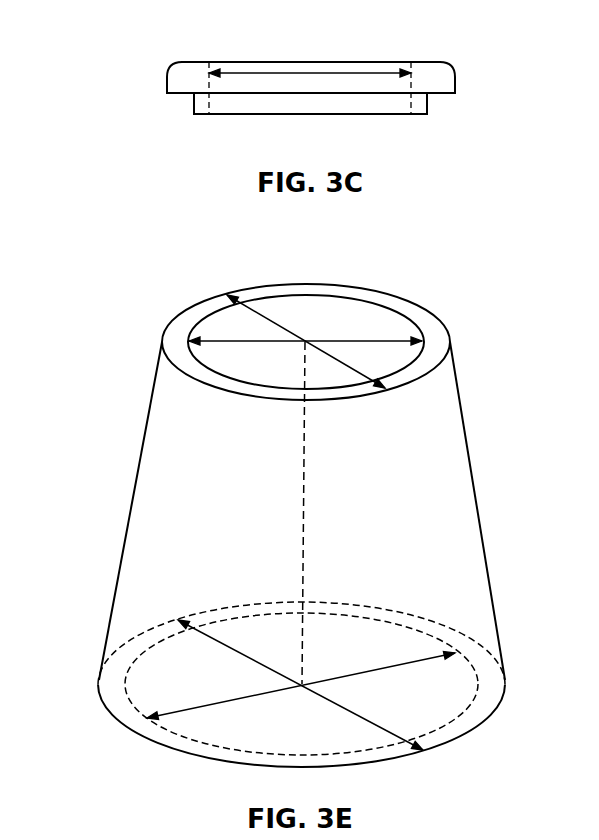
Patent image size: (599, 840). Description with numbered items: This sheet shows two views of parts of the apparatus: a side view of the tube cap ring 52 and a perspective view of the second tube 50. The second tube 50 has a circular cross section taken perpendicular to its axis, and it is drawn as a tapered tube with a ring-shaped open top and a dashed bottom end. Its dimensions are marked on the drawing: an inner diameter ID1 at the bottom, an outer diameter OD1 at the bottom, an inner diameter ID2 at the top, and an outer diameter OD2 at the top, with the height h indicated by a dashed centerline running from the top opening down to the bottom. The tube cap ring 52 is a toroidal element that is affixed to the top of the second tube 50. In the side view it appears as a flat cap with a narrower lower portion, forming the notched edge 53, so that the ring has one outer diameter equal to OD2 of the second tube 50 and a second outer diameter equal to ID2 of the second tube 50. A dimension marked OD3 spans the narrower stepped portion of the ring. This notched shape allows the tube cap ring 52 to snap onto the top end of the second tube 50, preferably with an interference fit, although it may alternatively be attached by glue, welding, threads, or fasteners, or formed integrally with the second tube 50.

In FIG. 3C, the tube cap ring 52 is at (183, 70).
In FIG. 3C, the notched edge 53 is at (180, 103).
In FIG. 3C, the outer diameter of cap OD3 is at (310, 72).
In FIG. 3E, the second tube 50 is at (122, 512).
In FIG. 3E, the height h is at (305, 530).
In FIG. 3E, the outer diameter at the top OD2 is at (257, 308).
In FIG. 3E, the inner diameter at the top ID2 is at (363, 338).
In FIG. 3E, the outer diameter at the bottom OD1 is at (203, 633).
In FIG. 3E, the inner diameter at the bottom ID1 is at (427, 664).